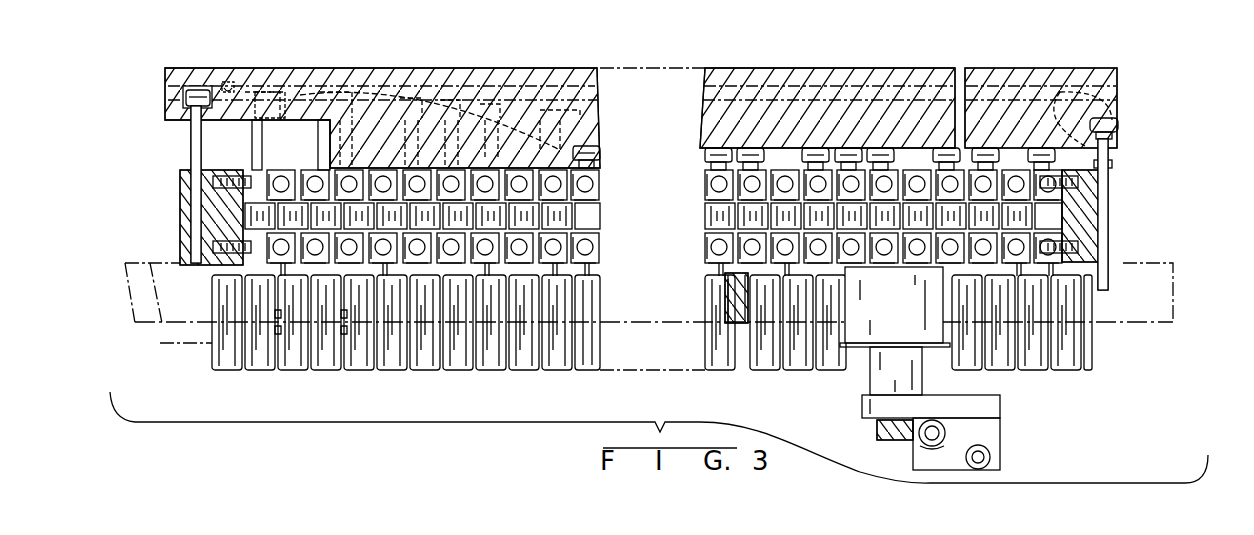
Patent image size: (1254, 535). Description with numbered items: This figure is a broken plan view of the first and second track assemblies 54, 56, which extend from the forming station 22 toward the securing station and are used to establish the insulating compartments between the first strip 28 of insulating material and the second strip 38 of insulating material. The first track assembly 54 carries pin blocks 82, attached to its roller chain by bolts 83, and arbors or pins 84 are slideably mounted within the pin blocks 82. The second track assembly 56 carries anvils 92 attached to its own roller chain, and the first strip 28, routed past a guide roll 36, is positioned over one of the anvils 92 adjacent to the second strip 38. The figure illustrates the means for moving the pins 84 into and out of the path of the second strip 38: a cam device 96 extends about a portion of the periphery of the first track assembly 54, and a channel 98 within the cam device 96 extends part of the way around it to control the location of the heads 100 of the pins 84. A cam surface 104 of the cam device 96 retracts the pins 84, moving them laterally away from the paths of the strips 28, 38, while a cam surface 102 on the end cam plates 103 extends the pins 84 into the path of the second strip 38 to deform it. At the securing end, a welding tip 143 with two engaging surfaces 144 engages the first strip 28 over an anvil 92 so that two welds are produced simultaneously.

The forming station 22 is at (1125, 255).
The first strip of insulating material 28 is at (162, 340).
The guide roll 36 is at (899, 316).
The second strip of insulating material 38 is at (1178, 296).
The first track assembly 54 is at (172, 228).
The second track assembly 56 is at (203, 357).
The pin blocks 82 is at (797, 167).
The bolts 83 is at (712, 180).
The arbors or pins 84 is at (262, 140).
The anvils 92 is at (427, 373).
The cam device 96 is at (179, 68).
The channel 98 is at (226, 88).
The heads of the pins 100 is at (273, 77).
The cam surface 102 is at (1108, 162).
The end cam plates 103 is at (1097, 65).
The cam surface 104 is at (403, 110).
The welding tip 143 is at (720, 288).
The engaging surfaces 144 is at (722, 292).